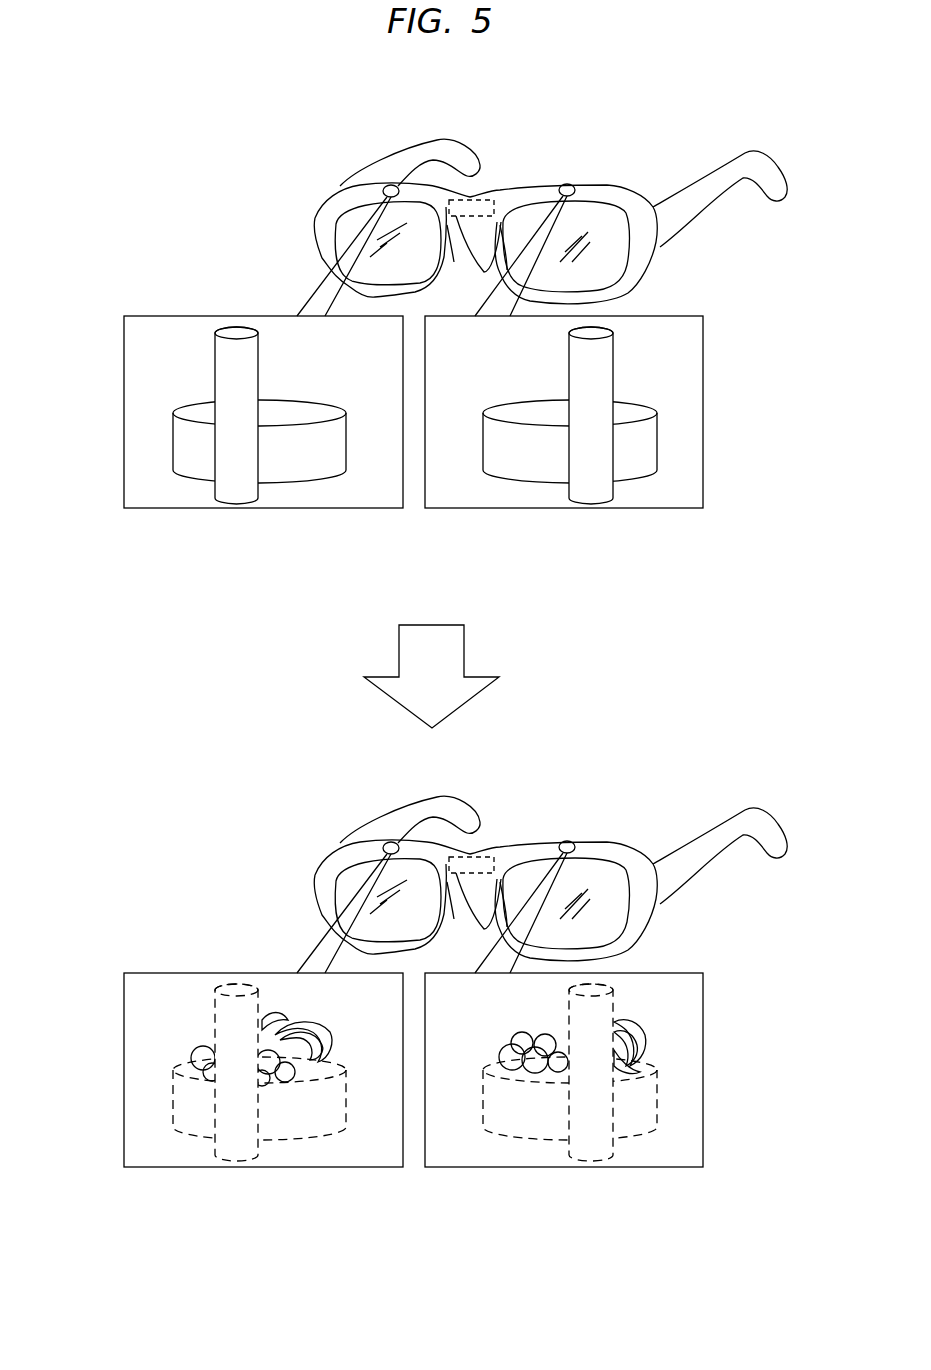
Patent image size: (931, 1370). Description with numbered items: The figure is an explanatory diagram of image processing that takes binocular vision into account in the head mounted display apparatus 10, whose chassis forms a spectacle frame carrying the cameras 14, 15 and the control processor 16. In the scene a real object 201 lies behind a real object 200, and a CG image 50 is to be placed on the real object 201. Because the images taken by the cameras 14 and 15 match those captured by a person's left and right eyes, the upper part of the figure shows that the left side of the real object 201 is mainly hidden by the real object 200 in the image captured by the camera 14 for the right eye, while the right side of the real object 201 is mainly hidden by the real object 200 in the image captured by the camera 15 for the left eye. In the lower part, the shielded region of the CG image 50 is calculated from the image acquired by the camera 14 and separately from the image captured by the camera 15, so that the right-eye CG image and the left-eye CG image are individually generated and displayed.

The head mounted display apparatus 10 is at (703, 253).
The camera 14 is at (386, 187).
The camera 15 is at (573, 186).
The control processor 16 is at (494, 200).
The CG image 50 is at (190, 1055).
The real object 200 is at (226, 490).
The real object 201 is at (183, 445).